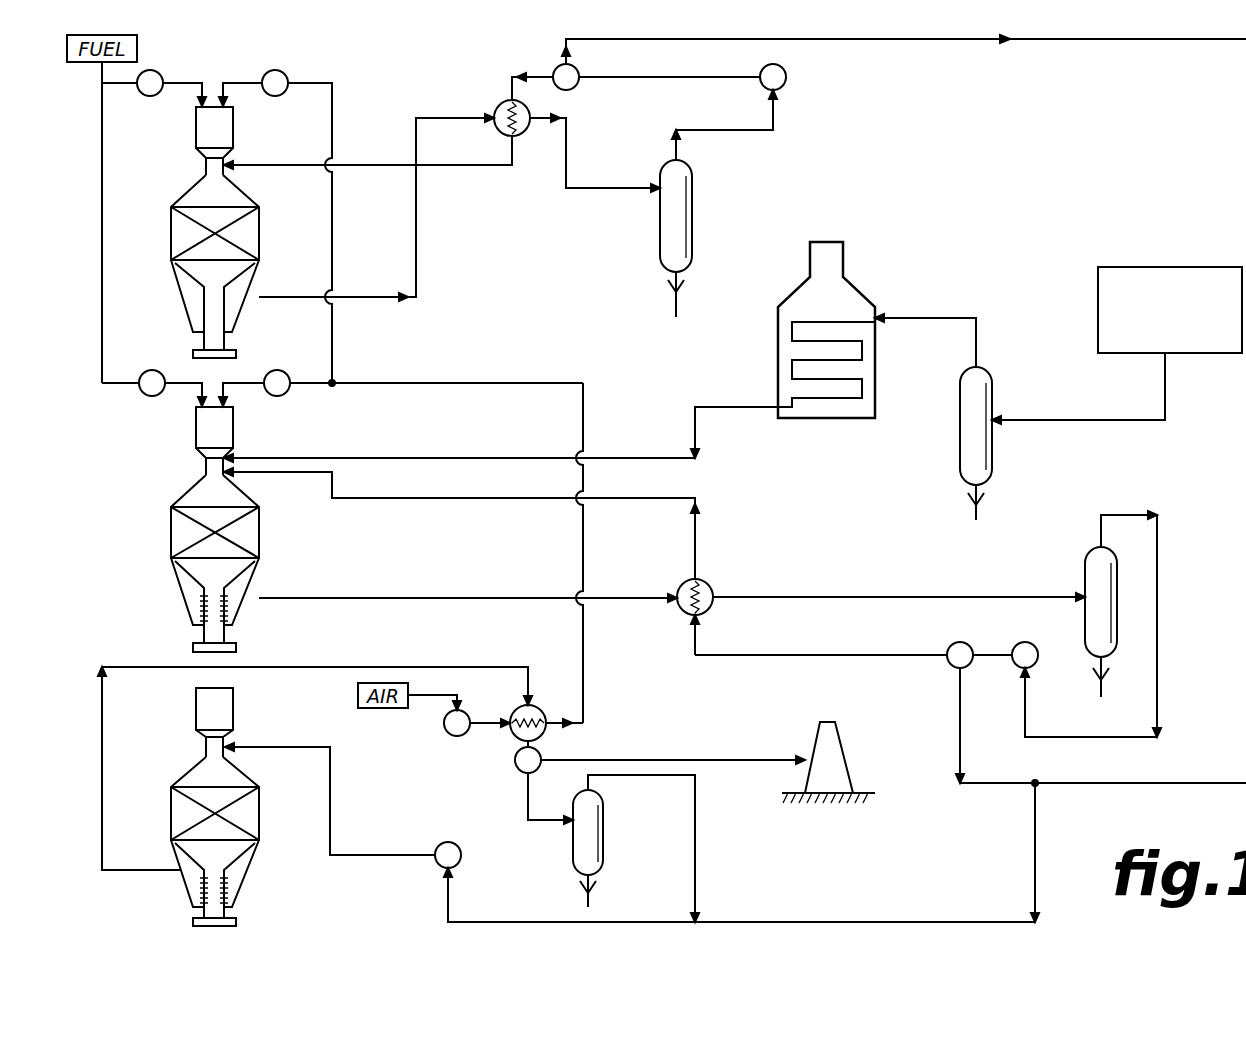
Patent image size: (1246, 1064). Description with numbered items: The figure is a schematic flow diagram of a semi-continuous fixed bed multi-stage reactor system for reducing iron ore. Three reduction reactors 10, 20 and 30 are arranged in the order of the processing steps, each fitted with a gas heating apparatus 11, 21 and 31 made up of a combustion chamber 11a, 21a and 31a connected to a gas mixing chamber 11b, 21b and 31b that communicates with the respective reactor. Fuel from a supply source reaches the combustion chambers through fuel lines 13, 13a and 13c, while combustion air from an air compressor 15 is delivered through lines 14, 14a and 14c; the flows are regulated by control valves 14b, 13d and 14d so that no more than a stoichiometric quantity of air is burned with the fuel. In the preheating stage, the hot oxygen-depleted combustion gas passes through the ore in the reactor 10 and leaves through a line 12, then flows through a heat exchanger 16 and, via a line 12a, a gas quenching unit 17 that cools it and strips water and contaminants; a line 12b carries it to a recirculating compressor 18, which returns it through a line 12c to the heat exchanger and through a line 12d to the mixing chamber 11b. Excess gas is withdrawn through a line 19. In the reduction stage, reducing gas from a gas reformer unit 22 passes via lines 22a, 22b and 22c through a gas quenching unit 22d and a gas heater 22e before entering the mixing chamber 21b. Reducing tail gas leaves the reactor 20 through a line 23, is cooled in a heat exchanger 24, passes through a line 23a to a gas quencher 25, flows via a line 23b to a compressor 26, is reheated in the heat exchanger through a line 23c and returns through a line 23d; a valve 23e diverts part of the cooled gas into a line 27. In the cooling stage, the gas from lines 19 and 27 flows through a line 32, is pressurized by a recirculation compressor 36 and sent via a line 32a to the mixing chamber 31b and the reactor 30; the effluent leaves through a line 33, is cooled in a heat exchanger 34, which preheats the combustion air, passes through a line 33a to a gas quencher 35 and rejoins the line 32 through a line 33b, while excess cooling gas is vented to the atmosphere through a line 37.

The reduction reactor 10 is at (162, 239).
The gas heating apparatus 11 is at (186, 118).
The combustion chamber 11a is at (195, 139).
The gas mixing chamber 11b is at (205, 166).
The heating gas recirculating line 12 is at (308, 297).
The heating gas recirculating line 12a is at (599, 189).
The heating gas recirculating line 12b is at (775, 110).
The heating gas recirculating line 12c is at (623, 80).
The heating gas recirculating line 12d is at (508, 166).
The fuel line 13 is at (100, 102).
The fuel line 13a is at (204, 54).
The fuel line 13c is at (104, 385).
The control valve 13d is at (154, 370).
The oxygen-containing gas line 14 is at (582, 634).
The oxygen-containing gas line 14a is at (312, 80).
The control valve 14b is at (282, 52).
The oxygen-containing gas line 14c is at (312, 385).
The control valve 14d is at (273, 370).
The air compressor 15 is at (445, 736).
The heat exchanger 16 is at (498, 106).
The gas quenching unit 17 is at (693, 190).
The gas recirculating compressor 18 is at (788, 74).
The gas removal line 19 is at (926, 40).
The reduction stage reactor 20 is at (162, 538).
The gas heating apparatus 21 is at (186, 420).
The combustion chamber 21a is at (196, 437).
The gas mixing chamber 21b is at (205, 463).
The gas reformer unit 22 is at (1175, 267).
The reducing gas line 22a is at (1105, 421).
The reducing gas line 22b is at (910, 318).
The reducing gas line 22c is at (416, 458).
The gas quenching unit 22d is at (960, 427).
The gas heater 22e is at (778, 342).
The reducing tail gas line 23 is at (358, 599).
The reducing tail gas line 23a is at (872, 597).
The reducing tail gas line 23b is at (1158, 608).
The reducing tail gas line 23c is at (742, 655).
The reducing tail gas line 23d is at (439, 498).
The valve 23e is at (953, 645).
The heat exchanger 24 is at (713, 586).
The gas quencher 25 is at (1085, 580).
The recirculating gas compressor 26 is at (1032, 644).
The tail gas removal line 27 is at (960, 745).
The cooling stage reactor 30 is at (162, 810).
The gas heating apparatus 31 is at (186, 695).
The combustion chamber 31a is at (197, 710).
The gas mixing chamber 31b is at (205, 741).
The cooling gas line 32 is at (893, 922).
The cooling gas line 32a is at (365, 855).
The cooling gas effluent line 33 is at (101, 752).
The cooling gas effluent line 33a is at (528, 794).
The cooling gas effluent line 33b is at (696, 829).
The gas heat exchanger 34 is at (521, 707).
The gas quencher 35 is at (573, 838).
The gas recirculation compressor 36 is at (461, 862).
The vent line 37 is at (658, 760).